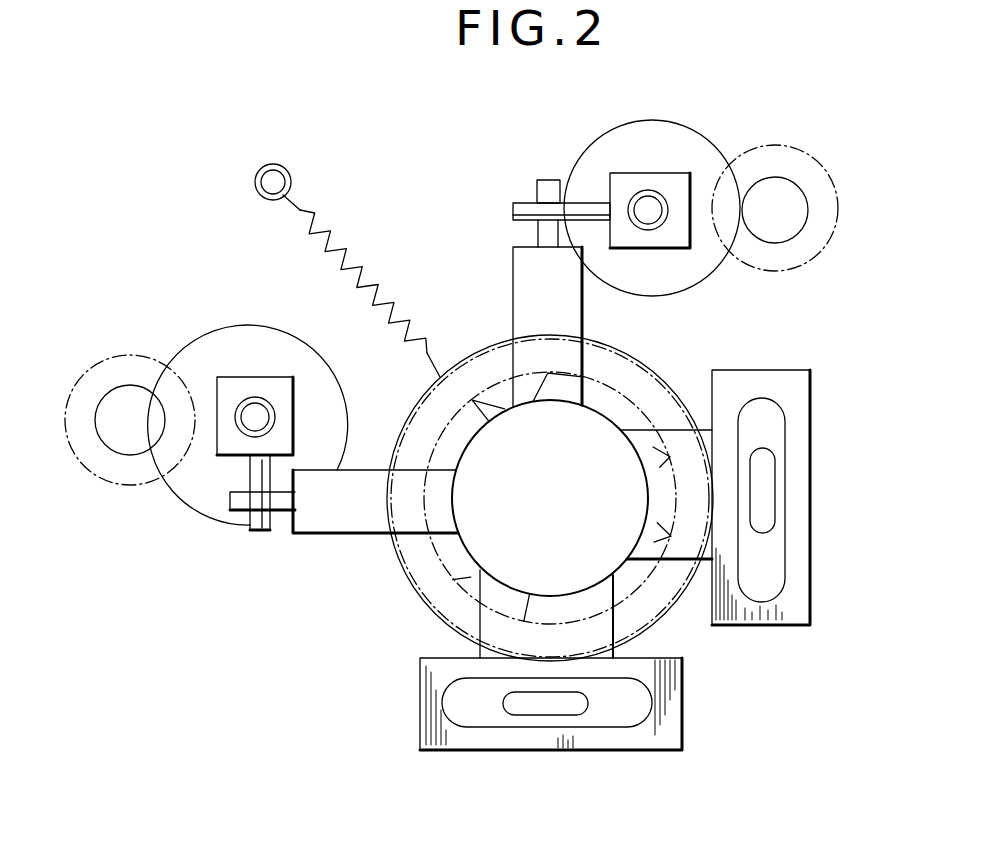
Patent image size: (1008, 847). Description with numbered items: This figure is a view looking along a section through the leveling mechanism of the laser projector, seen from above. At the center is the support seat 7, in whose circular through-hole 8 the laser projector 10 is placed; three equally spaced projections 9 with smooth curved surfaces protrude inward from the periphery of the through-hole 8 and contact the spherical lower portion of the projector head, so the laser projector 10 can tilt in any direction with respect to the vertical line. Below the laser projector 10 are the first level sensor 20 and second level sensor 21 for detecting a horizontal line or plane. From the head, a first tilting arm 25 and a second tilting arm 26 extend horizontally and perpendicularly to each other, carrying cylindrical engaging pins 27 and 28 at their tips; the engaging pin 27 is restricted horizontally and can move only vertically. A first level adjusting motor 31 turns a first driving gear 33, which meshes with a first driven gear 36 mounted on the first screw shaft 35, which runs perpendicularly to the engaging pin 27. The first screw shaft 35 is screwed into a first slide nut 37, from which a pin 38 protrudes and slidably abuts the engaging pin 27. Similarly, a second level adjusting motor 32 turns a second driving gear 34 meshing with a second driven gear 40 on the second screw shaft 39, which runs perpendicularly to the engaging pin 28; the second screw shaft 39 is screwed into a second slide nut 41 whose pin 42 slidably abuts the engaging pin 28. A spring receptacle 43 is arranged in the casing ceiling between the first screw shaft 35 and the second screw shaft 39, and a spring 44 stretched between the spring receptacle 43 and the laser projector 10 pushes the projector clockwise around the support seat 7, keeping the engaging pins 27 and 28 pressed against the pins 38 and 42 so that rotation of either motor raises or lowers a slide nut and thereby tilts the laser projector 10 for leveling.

The support seat 7 is at (423, 603).
The circular through-hole 8 is at (452, 433).
The projection 9 is at (655, 433).
The laser projector 10 is at (608, 418).
The first level sensor 20 is at (633, 705).
The second level sensor 21 is at (772, 583).
The first tilting arm 25 is at (373, 517).
The second tilting arm 26 is at (562, 313).
The engaging pin 27 is at (240, 513).
The engaging pin 28 is at (549, 180).
The first level adjusting motor 31 is at (99, 477).
The second level adjusting motor 32 is at (830, 173).
The first driving gear 33 is at (132, 455).
The second driving gear 34 is at (807, 222).
The first screw shaft 35 is at (253, 412).
The first driven gear 36 is at (205, 500).
The first slide nut 37 is at (257, 380).
The pin 38 is at (265, 532).
The second screw shaft 39 is at (655, 190).
The second driven gear 40 is at (643, 120).
The second slide nut 41 is at (692, 173).
The pin 42 is at (513, 203).
The spring receptacle 43 is at (273, 164).
The spring 44 is at (340, 247).